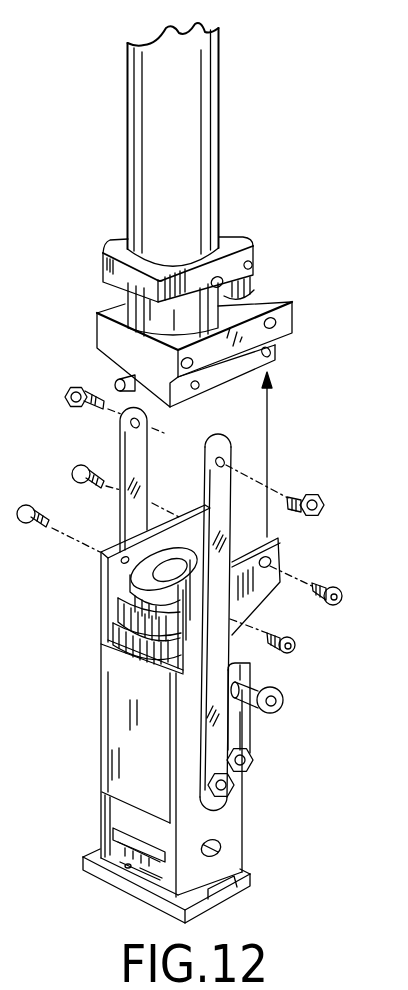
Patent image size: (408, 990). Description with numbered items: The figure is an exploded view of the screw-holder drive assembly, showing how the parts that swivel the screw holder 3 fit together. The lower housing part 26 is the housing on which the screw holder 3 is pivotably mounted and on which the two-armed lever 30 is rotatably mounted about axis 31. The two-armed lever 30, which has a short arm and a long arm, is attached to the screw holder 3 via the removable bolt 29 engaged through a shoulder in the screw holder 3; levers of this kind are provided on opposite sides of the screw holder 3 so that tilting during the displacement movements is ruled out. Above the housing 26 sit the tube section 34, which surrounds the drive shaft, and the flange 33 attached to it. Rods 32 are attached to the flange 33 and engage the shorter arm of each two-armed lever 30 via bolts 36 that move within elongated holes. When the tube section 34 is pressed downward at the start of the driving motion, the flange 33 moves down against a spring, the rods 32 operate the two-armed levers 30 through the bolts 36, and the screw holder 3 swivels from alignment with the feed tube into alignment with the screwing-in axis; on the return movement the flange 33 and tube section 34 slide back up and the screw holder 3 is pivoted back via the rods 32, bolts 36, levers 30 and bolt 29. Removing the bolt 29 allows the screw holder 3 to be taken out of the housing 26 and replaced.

The tube section 34 is at (219, 130).
The flange 33 is at (257, 247).
The rods 32 is at (122, 443).
The lower housing part 26 is at (234, 816).
The bolt 29 is at (276, 681).
The two-armed lever 30 is at (248, 720).
The axis 31 is at (253, 763).
The bolts 36 is at (234, 785).
The screw holder 3 is at (130, 838).